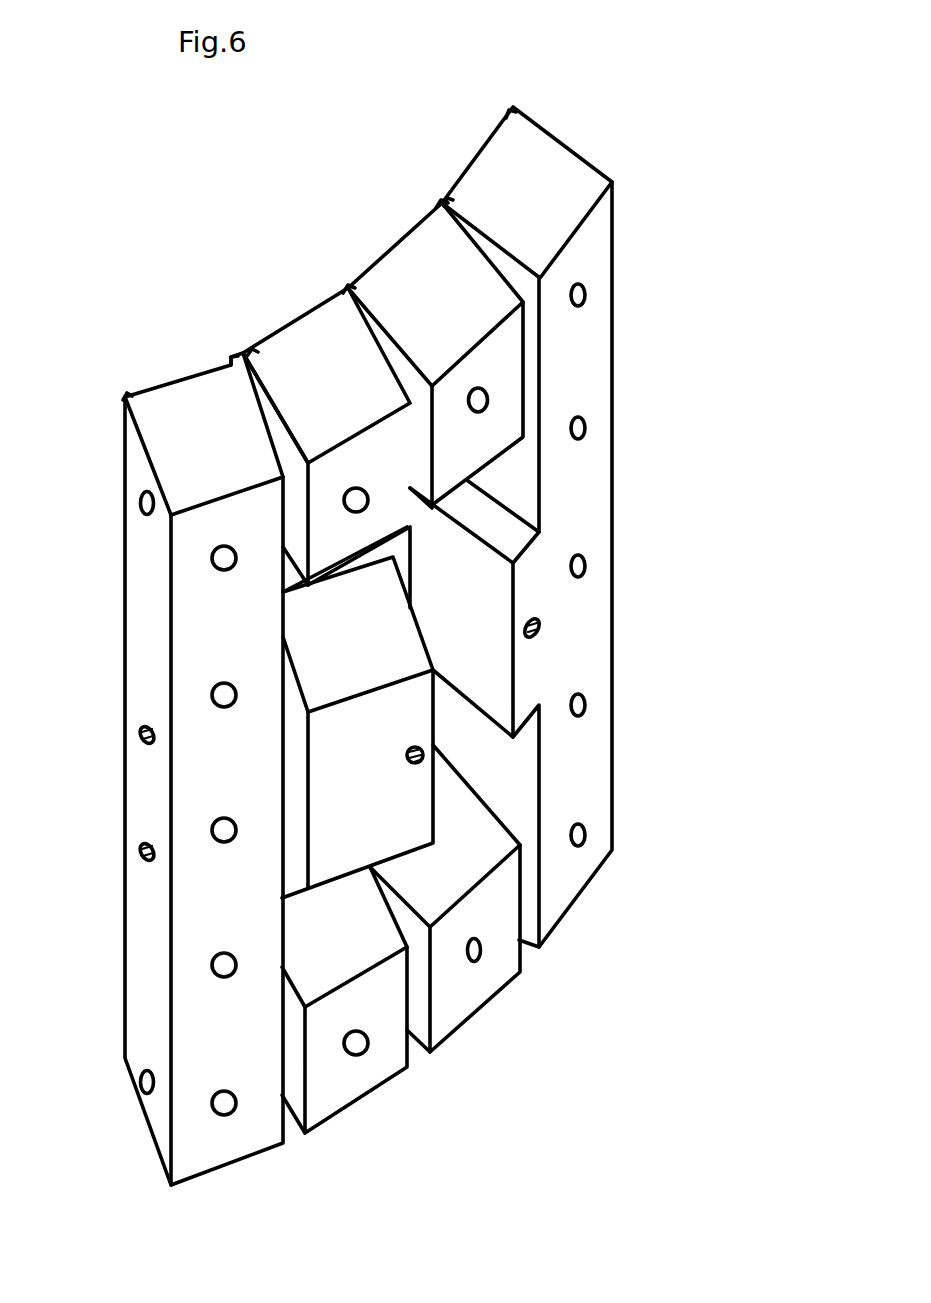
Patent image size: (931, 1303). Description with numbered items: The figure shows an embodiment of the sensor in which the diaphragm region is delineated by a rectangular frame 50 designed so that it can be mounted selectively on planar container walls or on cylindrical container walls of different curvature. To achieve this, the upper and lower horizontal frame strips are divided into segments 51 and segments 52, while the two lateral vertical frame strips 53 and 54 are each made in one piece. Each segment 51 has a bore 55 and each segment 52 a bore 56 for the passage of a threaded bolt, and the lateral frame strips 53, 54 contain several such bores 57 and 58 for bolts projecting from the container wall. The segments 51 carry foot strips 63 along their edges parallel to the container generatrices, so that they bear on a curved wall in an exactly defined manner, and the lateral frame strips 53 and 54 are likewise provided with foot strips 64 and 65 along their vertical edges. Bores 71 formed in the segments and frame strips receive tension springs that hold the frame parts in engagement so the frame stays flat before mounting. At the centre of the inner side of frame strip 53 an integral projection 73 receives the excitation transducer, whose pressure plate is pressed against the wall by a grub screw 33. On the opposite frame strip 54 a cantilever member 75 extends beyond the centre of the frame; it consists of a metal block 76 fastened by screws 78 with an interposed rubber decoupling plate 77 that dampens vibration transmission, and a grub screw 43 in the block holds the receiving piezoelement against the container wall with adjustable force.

The rectangular frame 50 is at (218, 266).
The segment 51 is at (320, 333).
The segment 52 is at (360, 1090).
The lateral frame strip 53 is at (557, 152).
The lateral frame strip 54 is at (127, 452).
The bore 55 is at (487, 400).
The bore 56 is at (366, 1048).
The bore 57 is at (232, 552).
The bore 58 is at (587, 296).
The foot strip 63 is at (250, 350).
The foot strip 64 is at (444, 192).
The foot strip 65 is at (233, 352).
The bore 71 is at (141, 503).
The projection 73 is at (510, 528).
The cantilever member 75 is at (373, 727).
The metal block 76 is at (325, 828).
The decoupling plate 77 is at (290, 780).
The screw 78 is at (141, 733).
The grub screw 33 is at (540, 628).
The grub screw 43 is at (413, 766).